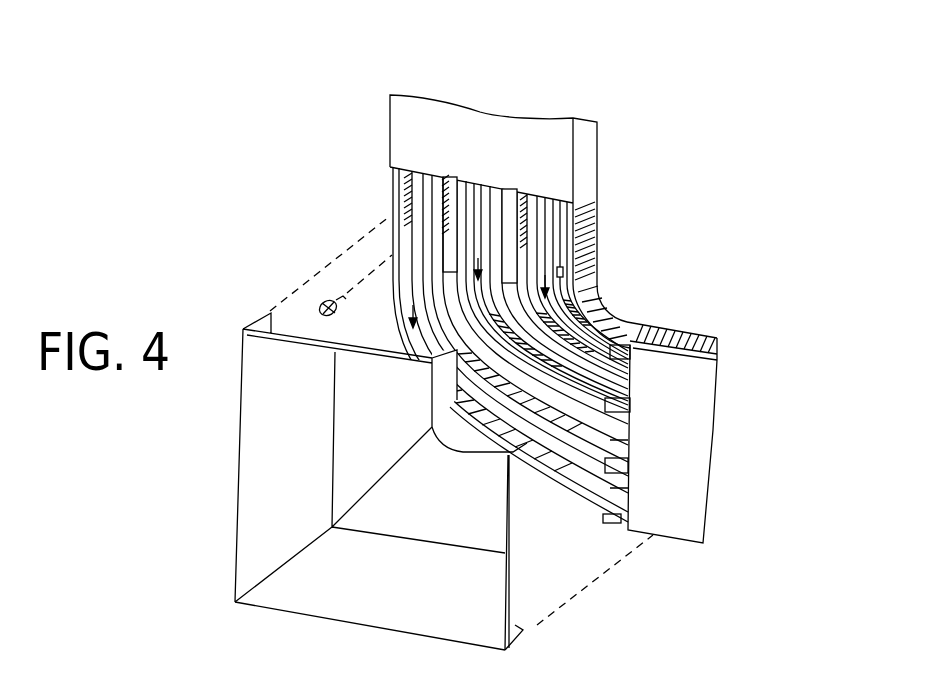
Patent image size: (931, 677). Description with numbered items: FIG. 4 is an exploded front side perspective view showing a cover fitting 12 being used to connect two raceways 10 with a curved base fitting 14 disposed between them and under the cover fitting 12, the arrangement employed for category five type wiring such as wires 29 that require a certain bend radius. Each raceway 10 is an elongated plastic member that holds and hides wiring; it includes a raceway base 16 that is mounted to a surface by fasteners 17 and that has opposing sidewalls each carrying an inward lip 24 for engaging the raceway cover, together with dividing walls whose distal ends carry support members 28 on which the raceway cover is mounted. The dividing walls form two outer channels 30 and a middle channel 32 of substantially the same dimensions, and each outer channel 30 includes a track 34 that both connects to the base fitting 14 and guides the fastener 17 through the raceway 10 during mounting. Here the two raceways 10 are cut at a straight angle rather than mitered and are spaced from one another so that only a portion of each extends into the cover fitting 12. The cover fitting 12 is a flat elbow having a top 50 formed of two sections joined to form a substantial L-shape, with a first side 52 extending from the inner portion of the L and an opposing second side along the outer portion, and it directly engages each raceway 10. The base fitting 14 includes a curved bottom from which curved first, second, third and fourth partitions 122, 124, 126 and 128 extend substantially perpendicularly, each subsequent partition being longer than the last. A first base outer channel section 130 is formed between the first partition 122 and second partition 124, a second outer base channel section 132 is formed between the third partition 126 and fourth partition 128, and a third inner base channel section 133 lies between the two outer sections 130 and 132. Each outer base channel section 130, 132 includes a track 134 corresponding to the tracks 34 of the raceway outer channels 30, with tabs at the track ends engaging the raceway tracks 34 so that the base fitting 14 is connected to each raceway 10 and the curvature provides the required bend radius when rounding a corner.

The raceway 10 is at (374, 122).
The cover fitting 12 is at (200, 532).
The base fitting 14 is at (703, 261).
The raceway base 16 is at (632, 420).
The fastener 17 is at (322, 307).
The inward lip 24 is at (391, 182).
The support member 28 is at (512, 207).
The wires 29 is at (457, 393).
The outer channel 30 is at (427, 186).
The middle channel 32 is at (480, 198).
The track 34 is at (571, 210).
The top 50 is at (257, 477).
The first side 52 is at (497, 447).
The first partition 122 is at (607, 318).
The second partition 124 is at (598, 300).
The third partition 126 is at (632, 470).
The fourth partition 128 is at (388, 343).
The first base outer channel section 130 is at (572, 246).
The second outer base channel section 132 is at (408, 281).
The third inner base channel section 133 is at (470, 193).
The track 134 is at (622, 328).